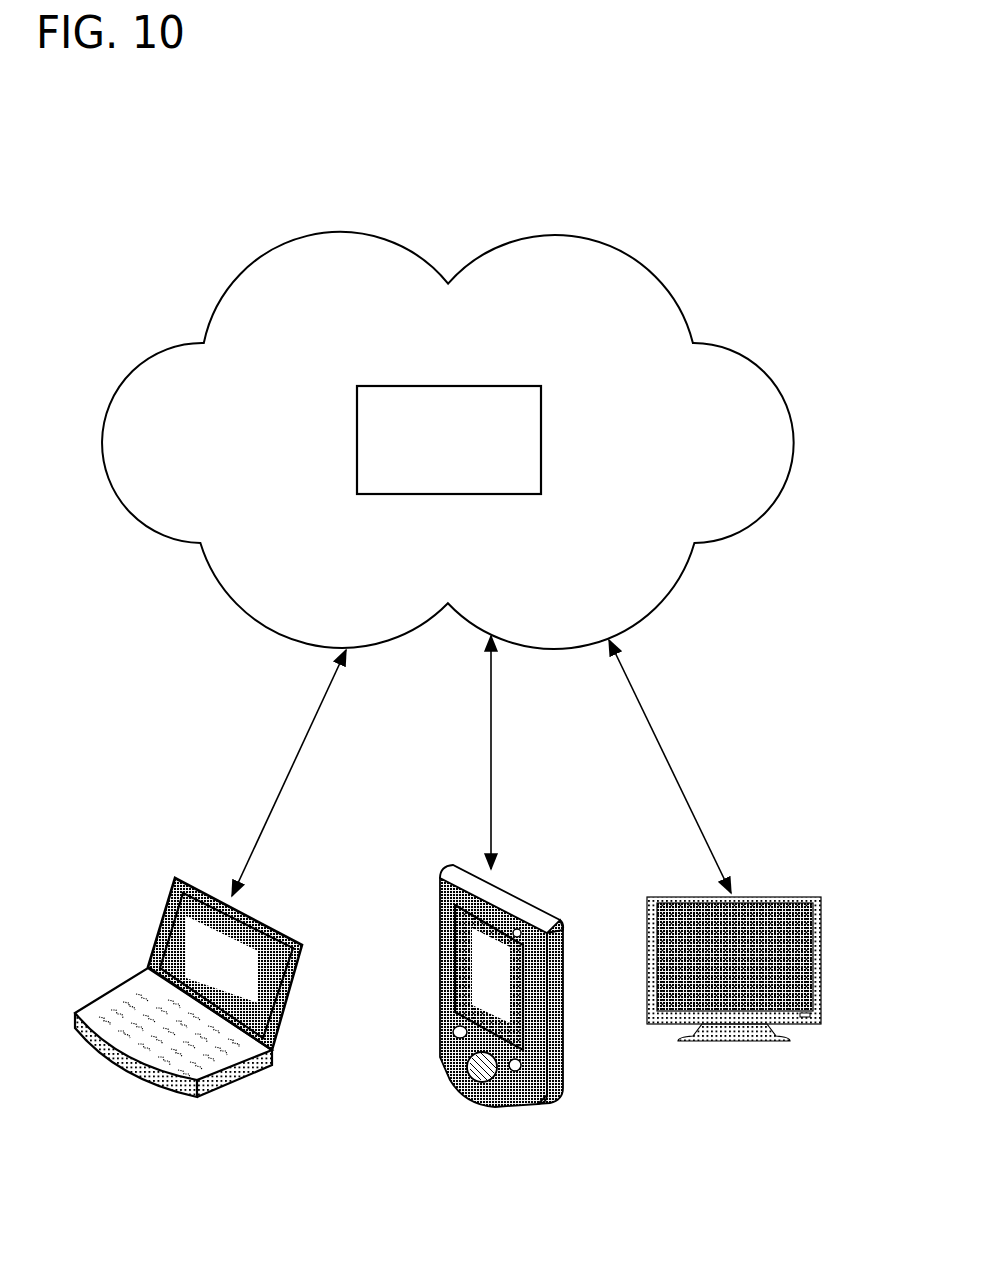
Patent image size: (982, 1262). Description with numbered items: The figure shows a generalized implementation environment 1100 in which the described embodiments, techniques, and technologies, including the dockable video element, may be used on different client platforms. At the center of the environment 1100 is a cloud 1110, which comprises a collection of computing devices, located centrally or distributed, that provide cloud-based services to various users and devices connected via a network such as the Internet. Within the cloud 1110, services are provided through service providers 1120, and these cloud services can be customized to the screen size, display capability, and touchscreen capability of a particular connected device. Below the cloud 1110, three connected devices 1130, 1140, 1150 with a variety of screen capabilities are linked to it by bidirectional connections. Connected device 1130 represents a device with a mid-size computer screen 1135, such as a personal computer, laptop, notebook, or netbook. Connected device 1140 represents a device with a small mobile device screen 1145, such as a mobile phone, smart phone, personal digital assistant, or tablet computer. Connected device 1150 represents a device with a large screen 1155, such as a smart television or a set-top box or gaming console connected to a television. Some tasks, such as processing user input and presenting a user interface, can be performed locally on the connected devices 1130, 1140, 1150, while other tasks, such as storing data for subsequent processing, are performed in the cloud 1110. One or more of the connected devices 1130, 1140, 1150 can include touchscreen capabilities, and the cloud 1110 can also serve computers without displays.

The implementation environment 1100 is at (764, 231).
The cloud 1110 is at (448, 440).
The service providers 1120 is at (449, 440).
The connected device 1130 is at (87, 1005).
The computer screen 1135 is at (240, 970).
The connected device 1140 is at (453, 862).
The mobile device screen 1145 is at (512, 993).
The connected device 1150 is at (802, 897).
The large screen 1155 is at (755, 969).